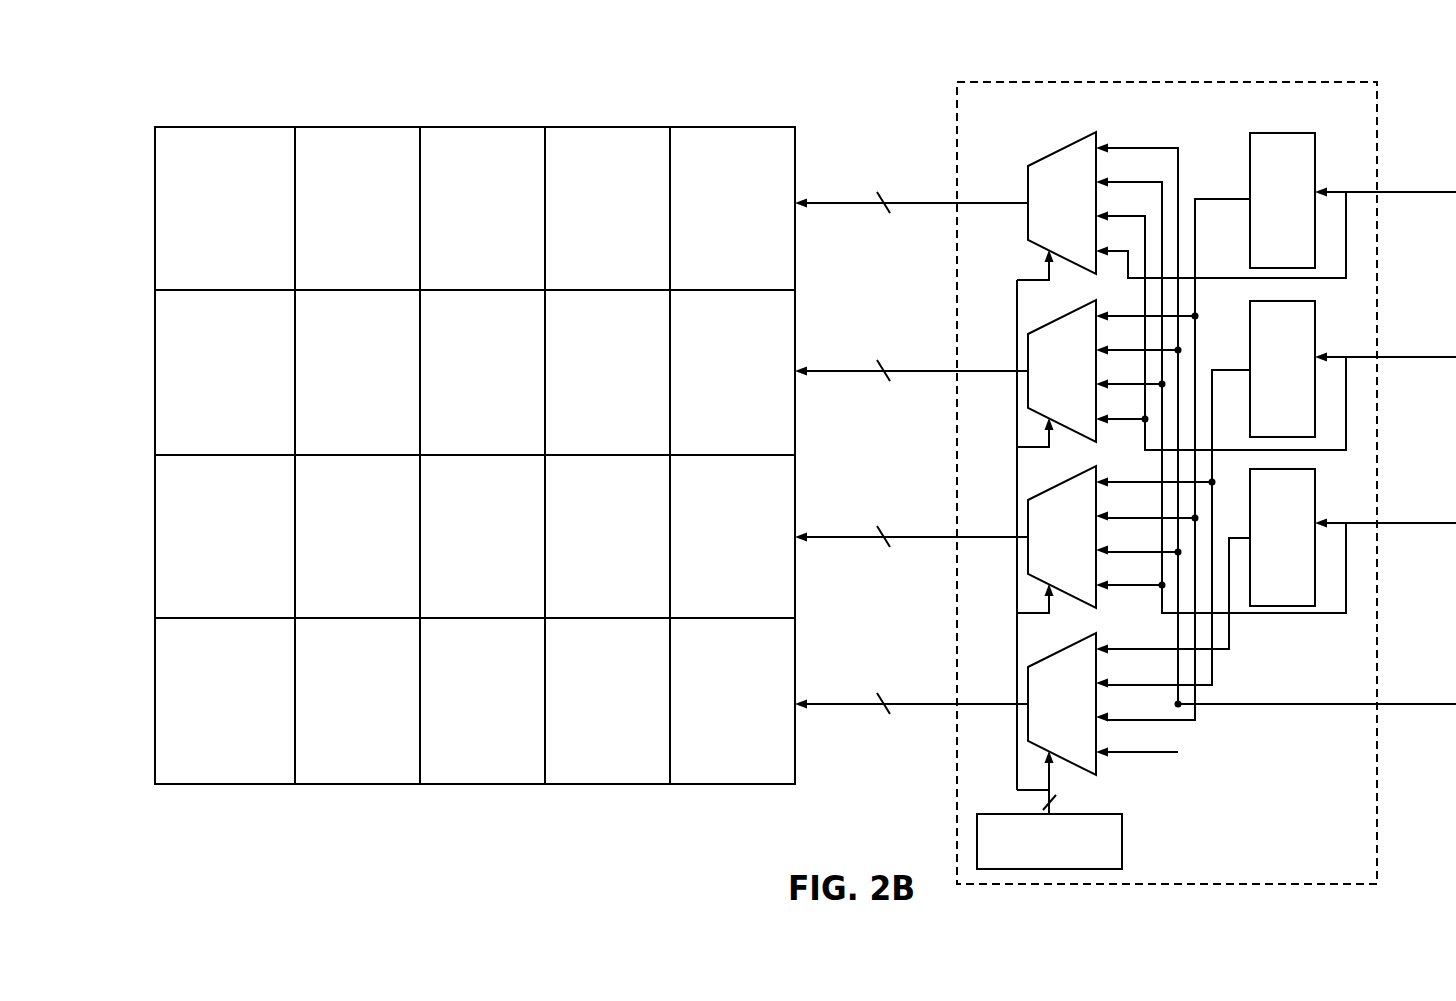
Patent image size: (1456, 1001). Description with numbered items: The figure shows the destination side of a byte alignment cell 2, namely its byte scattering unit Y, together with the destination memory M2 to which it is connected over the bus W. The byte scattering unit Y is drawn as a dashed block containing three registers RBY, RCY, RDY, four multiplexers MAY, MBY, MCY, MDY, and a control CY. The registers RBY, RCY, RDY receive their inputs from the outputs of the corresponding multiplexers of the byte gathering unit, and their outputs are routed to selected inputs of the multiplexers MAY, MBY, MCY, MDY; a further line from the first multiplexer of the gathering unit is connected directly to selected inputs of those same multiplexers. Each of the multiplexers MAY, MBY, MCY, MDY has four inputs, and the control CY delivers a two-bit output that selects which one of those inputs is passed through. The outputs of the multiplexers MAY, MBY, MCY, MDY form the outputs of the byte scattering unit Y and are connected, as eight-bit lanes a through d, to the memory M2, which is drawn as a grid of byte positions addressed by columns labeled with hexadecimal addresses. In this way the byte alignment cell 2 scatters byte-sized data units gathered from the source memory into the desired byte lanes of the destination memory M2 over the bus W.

The byte alignment cell 2 is at (1398, 839).
The memory M2 is at (500, 126).
The bus W is at (893, 145).
The byte scattering unit Y is at (1196, 80).
The multiplexer MDY is at (1063, 149).
The multiplexer MCY is at (1052, 318).
The multiplexer MBY is at (1052, 485).
The multiplexer MAY is at (1052, 654).
The register RDY is at (1317, 165).
The register RCY is at (1317, 340).
The register RBY is at (1317, 505).
The control CY is at (1123, 830).